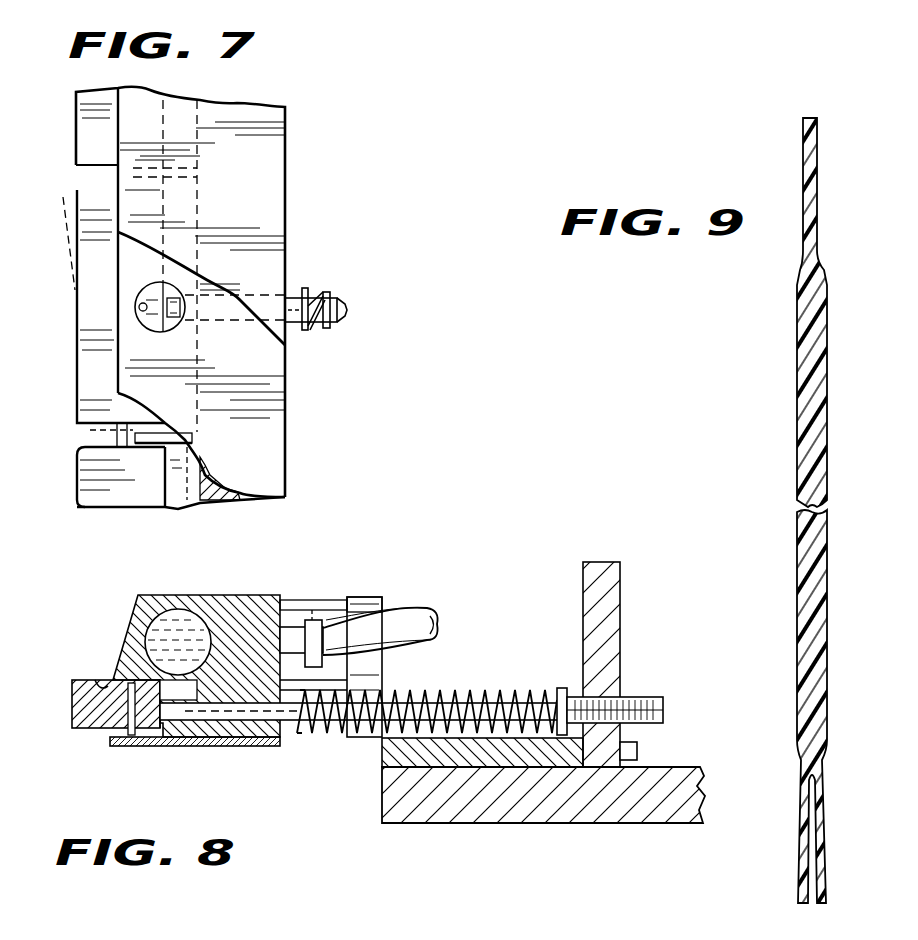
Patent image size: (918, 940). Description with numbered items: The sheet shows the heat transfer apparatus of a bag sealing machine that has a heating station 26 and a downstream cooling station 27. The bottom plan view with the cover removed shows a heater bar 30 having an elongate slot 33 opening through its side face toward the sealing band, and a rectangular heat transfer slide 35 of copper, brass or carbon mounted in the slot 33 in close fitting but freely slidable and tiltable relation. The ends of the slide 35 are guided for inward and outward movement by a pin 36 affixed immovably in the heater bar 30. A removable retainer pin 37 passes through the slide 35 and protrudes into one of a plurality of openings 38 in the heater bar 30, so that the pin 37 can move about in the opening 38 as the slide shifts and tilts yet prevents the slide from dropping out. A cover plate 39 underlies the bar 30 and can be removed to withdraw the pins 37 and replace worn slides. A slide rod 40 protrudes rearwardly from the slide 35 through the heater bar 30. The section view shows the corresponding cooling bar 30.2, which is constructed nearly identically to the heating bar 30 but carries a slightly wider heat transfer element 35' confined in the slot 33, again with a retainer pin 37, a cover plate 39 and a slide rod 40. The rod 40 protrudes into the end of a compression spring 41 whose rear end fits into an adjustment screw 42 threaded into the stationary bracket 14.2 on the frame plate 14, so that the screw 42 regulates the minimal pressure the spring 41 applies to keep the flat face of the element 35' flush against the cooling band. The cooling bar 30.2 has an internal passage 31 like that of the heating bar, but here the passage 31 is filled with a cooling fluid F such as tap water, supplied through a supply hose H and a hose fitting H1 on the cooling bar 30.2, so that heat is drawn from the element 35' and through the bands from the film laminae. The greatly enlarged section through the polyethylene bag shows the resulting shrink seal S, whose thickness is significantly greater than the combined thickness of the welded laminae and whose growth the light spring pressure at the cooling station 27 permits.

In FIG. 7, the heating station 26 is at (286, 87).
In FIG. 7, the heater bar 30 is at (275, 390).
In FIG. 7, the cover plate 39 is at (262, 186).
In FIG. 8, the cover plate 39 is at (197, 746).
In FIG. 7, the heat transfer slide 35 is at (87, 334).
In FIG. 7, the pin 36 is at (157, 443).
In FIG. 7, the slot 33 is at (187, 477).
In FIG. 8, the slot 33 is at (105, 690).
In FIG. 7, the retainer pin 37 is at (140, 306).
In FIG. 8, the retainer pin 37 is at (131, 745).
In FIG. 7, the opening 38 is at (172, 298).
In FIG. 7, the slide rod 40 is at (298, 288).
In FIG. 8, the slide rod 40 is at (258, 712).
In FIG. 8, the frame plate 14 is at (580, 823).
In FIG. 8, the bracket 14.2 is at (610, 618).
In FIG. 8, the heat transfer element 35' is at (90, 694).
In FIG. 8, the cooling bar 30.2 is at (257, 600).
In FIG. 8, the cooling fluid F is at (157, 637).
In FIG. 8, the internal passage 31 is at (194, 607).
In FIG. 8, the hose fitting H1 is at (287, 627).
In FIG. 8, the supply hose H is at (403, 613).
In FIG. 8, the cooling station 27 is at (445, 611).
In FIG. 8, the compression spring 41 is at (453, 690).
In FIG. 8, the adjustment screw 42 is at (643, 700).
In FIG. 9, the shrink seal S is at (800, 641).